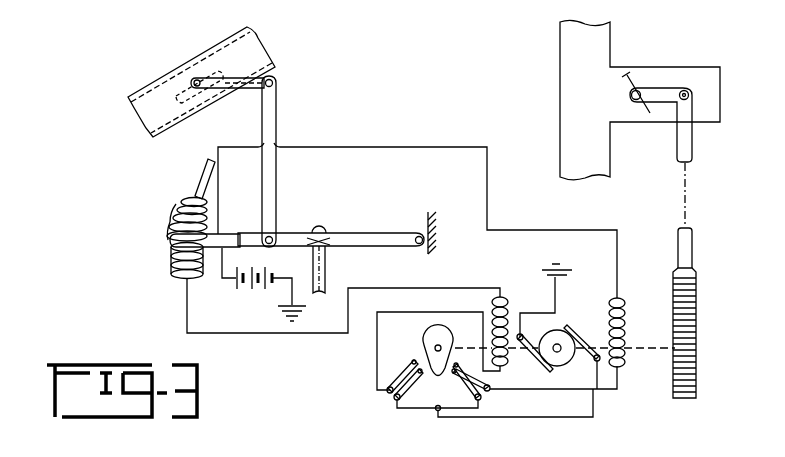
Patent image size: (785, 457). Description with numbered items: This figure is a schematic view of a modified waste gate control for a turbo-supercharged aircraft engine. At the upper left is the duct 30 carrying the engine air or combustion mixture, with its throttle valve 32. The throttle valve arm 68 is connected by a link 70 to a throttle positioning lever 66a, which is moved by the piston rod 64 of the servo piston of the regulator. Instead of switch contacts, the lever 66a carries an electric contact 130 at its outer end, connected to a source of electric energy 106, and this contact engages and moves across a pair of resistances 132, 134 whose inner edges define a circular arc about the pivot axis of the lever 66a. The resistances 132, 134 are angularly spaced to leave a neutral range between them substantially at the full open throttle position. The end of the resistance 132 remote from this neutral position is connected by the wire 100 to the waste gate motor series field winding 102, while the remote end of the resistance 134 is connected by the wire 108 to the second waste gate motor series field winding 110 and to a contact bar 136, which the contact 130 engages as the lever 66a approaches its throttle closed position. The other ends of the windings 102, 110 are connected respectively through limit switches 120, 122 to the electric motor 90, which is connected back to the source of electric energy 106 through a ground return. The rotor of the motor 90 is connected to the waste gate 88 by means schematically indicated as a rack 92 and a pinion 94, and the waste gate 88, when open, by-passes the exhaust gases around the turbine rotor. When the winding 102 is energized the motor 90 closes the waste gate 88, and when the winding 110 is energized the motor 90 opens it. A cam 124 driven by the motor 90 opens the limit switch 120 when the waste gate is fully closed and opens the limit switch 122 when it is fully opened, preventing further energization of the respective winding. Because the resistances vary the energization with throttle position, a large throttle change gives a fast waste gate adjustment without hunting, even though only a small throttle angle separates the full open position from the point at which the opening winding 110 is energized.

The duct 30 is at (155, 78).
The throttle valve 32 is at (178, 95).
The throttle valve arm 68 is at (253, 88).
The link 70 is at (274, 172).
The throttle positioning lever 66a is at (358, 233).
The piston rod 64 is at (327, 263).
The electric contact 130 is at (220, 235).
The contact bar 136 is at (212, 173).
The resistance 134 is at (182, 220).
The resistance 132 is at (180, 272).
The wire 100 is at (307, 334).
The source of electric energy 106 is at (262, 286).
The wire 108 is at (372, 147).
The waste gate motor series field winding 102 is at (493, 298).
The cam 124 is at (432, 338).
The limit switch 120 is at (392, 393).
The limit switch 122 is at (489, 392).
The electric motor 90 is at (558, 330).
The second waste gate motor series field winding 110 is at (623, 312).
The waste gate 88 is at (632, 83).
The rack 92 is at (685, 248).
The pinion 94 is at (696, 343).